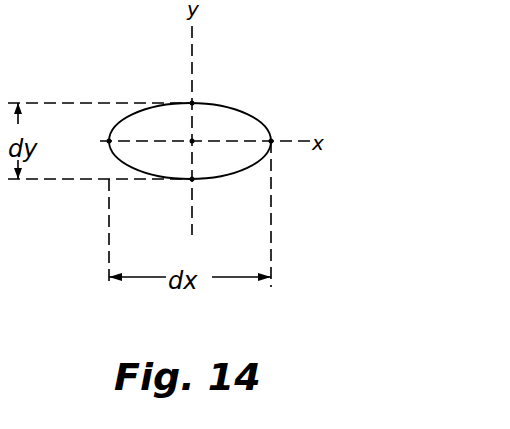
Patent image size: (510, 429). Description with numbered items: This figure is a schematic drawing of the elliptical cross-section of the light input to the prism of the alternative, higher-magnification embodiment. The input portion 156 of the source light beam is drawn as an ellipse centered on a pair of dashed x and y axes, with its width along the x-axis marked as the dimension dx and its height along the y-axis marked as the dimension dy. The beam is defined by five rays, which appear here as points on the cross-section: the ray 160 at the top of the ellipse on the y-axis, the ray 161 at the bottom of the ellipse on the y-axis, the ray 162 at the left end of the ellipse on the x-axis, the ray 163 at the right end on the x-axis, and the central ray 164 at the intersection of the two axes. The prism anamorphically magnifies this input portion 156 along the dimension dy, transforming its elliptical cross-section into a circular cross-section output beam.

The input portion of the beam 156 is at (268, 80).
The ray 160 is at (192, 103).
The ray 161 is at (192, 179).
The ray 162 is at (109, 141).
The ray 163 is at (271, 141).
The ray 164 is at (192, 141).